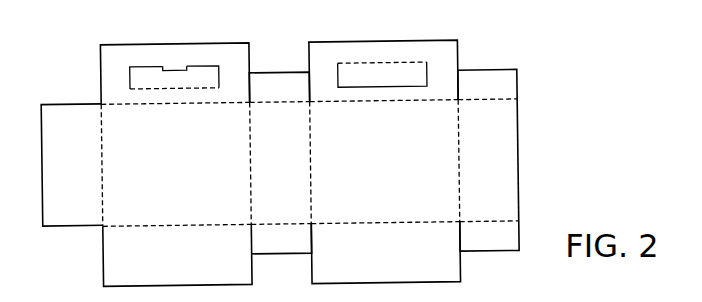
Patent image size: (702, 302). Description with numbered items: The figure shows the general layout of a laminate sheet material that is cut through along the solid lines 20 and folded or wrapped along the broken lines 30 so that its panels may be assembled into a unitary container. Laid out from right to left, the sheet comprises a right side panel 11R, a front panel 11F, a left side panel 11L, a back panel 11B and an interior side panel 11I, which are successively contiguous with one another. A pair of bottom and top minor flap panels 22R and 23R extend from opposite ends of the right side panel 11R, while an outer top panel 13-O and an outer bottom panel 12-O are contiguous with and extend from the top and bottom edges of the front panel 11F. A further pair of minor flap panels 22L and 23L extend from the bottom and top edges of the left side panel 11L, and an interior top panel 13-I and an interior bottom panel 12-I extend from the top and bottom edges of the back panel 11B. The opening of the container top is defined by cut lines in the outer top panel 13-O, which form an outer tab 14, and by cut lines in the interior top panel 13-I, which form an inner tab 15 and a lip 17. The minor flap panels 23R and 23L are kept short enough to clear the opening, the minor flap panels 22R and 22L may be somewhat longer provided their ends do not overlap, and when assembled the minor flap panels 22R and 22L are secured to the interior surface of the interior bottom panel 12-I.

The interior side panel 11I is at (55, 178).
The back panel 11B is at (163, 166).
The interior top panel 13-I is at (143, 63).
The inner tab 15 is at (197, 69).
The lip 17 is at (179, 67).
The interior bottom panel 12-I is at (163, 266).
The solid lines 20 is at (252, 243).
The left side panel 11L is at (296, 195).
The minor flap panel 23L is at (279, 77).
The minor flap panel 22L is at (277, 242).
The broken lines 30 is at (309, 156).
The front panel 11F is at (385, 162).
The outer top panel 13-O is at (319, 62).
The outer tab 14 is at (409, 80).
The outer bottom panel 12-O is at (359, 258).
The right side panel 11R is at (497, 174).
The minor flap panel 23R is at (497, 80).
The minor flap panel 22R is at (490, 247).